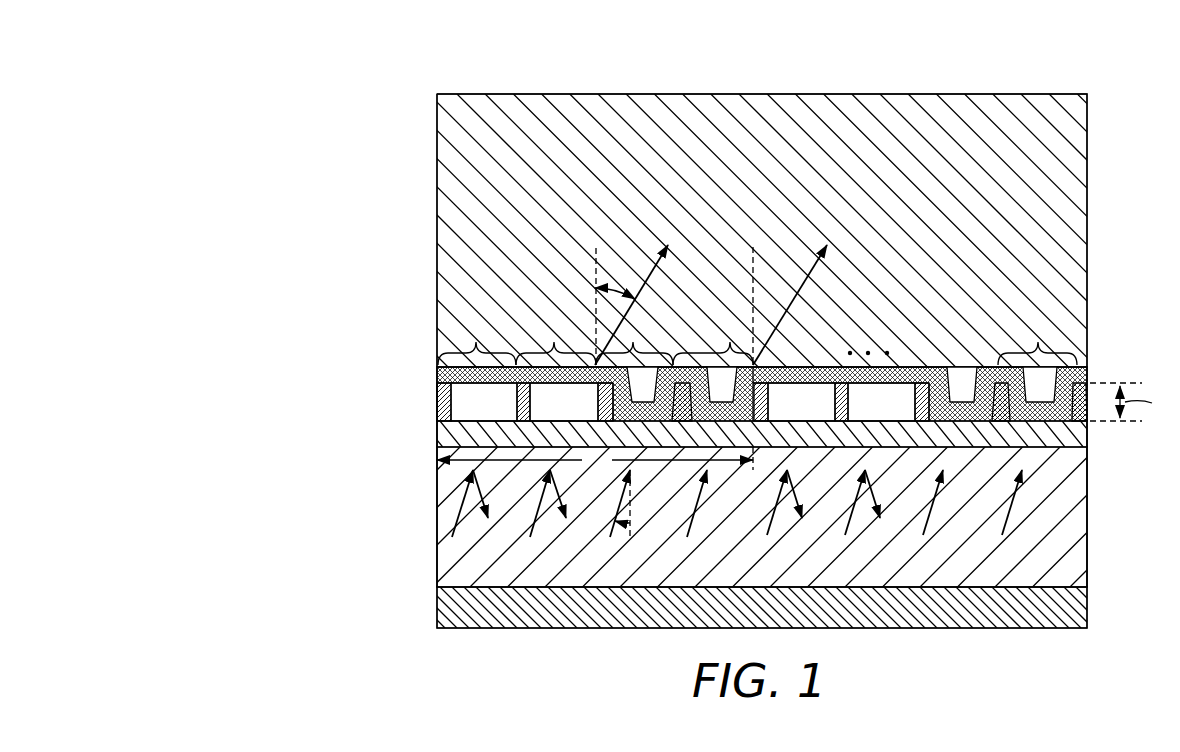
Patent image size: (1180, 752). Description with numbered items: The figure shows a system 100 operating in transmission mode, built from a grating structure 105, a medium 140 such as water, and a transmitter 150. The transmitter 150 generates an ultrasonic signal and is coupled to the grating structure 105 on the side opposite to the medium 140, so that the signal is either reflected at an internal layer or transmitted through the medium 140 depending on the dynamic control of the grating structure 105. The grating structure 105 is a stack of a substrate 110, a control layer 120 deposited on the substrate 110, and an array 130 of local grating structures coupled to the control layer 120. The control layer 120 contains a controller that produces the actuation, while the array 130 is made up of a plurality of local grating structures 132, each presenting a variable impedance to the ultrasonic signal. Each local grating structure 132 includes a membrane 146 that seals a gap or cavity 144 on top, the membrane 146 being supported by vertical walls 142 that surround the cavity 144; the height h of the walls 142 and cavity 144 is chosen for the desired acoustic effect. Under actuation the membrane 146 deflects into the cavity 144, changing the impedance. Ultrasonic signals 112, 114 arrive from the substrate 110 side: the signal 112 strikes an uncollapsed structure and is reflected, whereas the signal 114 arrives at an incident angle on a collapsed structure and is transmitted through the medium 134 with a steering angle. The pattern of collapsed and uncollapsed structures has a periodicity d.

The system 100 is at (785, 70).
The grating structure 105 is at (393, 587).
The substrate 110 is at (437, 518).
The signal 112 is at (529, 548).
The signal 114 is at (606, 548).
The control layer 120 is at (437, 435).
The array of local grating structures 130 is at (347, 348).
The local grating structure 132 is at (757, 340).
The medium 134 is at (645, 232).
The medium 140 is at (437, 233).
The vertical walls 142 is at (436, 398).
The gap or cavity 144 is at (435, 413).
The membrane 146 is at (437, 376).
The transmitter 150 is at (437, 606).